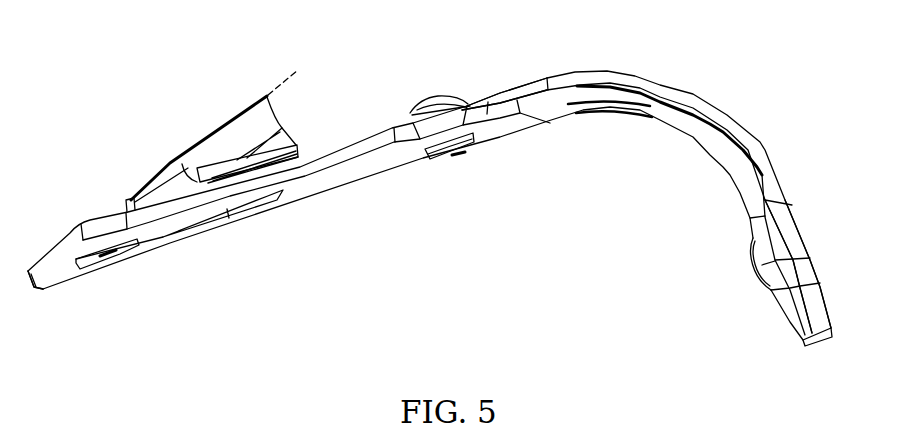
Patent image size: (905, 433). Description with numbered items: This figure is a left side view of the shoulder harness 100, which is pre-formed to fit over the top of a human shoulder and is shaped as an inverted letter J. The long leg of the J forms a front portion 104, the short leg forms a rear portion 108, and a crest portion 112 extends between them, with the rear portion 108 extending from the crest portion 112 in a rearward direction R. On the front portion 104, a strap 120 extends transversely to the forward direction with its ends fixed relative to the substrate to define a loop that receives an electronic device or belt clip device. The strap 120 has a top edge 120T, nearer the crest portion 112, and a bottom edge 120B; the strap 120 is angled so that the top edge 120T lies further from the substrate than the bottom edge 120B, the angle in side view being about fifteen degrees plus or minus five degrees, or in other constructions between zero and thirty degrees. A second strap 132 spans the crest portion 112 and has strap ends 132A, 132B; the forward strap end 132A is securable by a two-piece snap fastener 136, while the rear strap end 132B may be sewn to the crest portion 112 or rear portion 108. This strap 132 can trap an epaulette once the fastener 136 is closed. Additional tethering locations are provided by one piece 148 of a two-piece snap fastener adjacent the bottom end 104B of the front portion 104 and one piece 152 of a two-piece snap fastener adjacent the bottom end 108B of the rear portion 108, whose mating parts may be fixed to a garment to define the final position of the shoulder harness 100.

The shoulder harness 100 is at (192, 64).
The front portion 104 is at (201, 272).
The bottom end 104B is at (40, 290).
The rear portion 108 is at (768, 330).
The bottom end 108B is at (808, 346).
The crest portion 112 is at (534, 53).
The strap 120 is at (166, 180).
The top edge 120T is at (183, 160).
The bottom edge 120B is at (128, 198).
The strap 132 is at (694, 99).
The forward strap end 132A is at (491, 91).
The rear strap end 132B is at (795, 238).
The fastener 136 is at (434, 116).
The fastener piece 148 is at (113, 265).
The fastener piece 152 is at (767, 281).
The rearward direction R is at (688, 142).